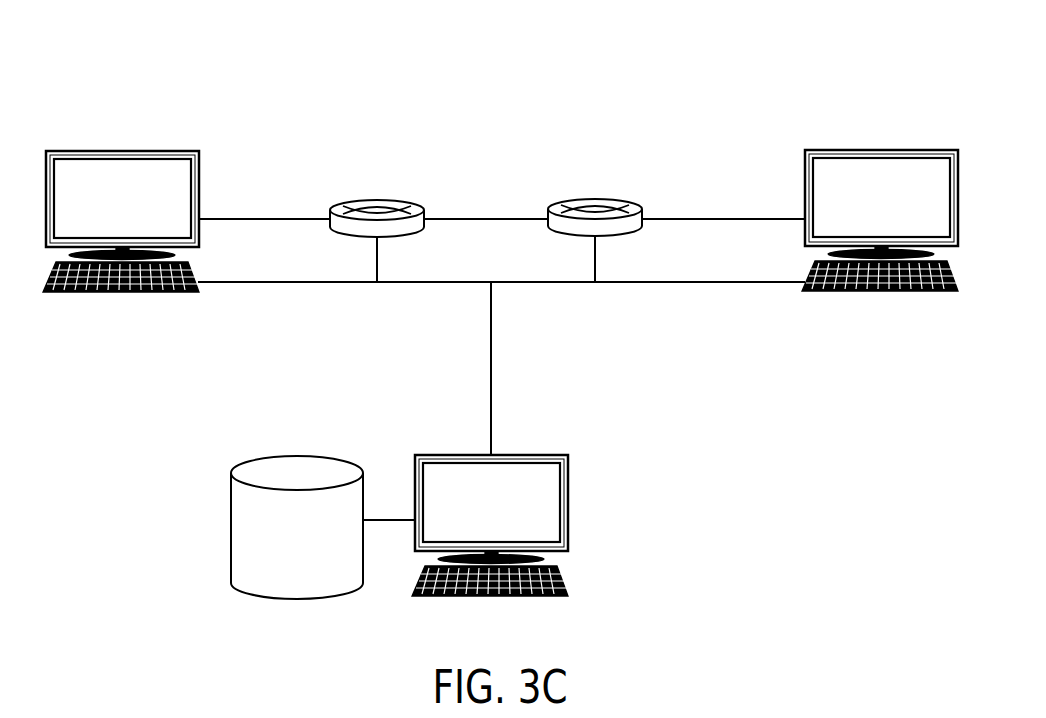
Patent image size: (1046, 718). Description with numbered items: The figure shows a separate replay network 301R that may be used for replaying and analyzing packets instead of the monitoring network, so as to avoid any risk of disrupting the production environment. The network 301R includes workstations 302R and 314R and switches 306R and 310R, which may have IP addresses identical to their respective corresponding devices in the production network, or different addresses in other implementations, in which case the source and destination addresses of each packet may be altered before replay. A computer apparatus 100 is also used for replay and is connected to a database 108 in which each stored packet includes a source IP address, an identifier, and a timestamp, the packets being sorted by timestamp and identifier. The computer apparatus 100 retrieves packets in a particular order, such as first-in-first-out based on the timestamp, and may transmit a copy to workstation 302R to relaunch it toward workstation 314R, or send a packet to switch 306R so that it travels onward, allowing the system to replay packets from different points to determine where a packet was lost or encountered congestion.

The replay network 301R is at (566, 76).
The workstation 302R is at (100, 150).
The switch 306R is at (377, 200).
The switch 310R is at (615, 198).
The workstation 314R is at (805, 178).
The computer apparatus 100 is at (568, 482).
The database 108 is at (230, 512).